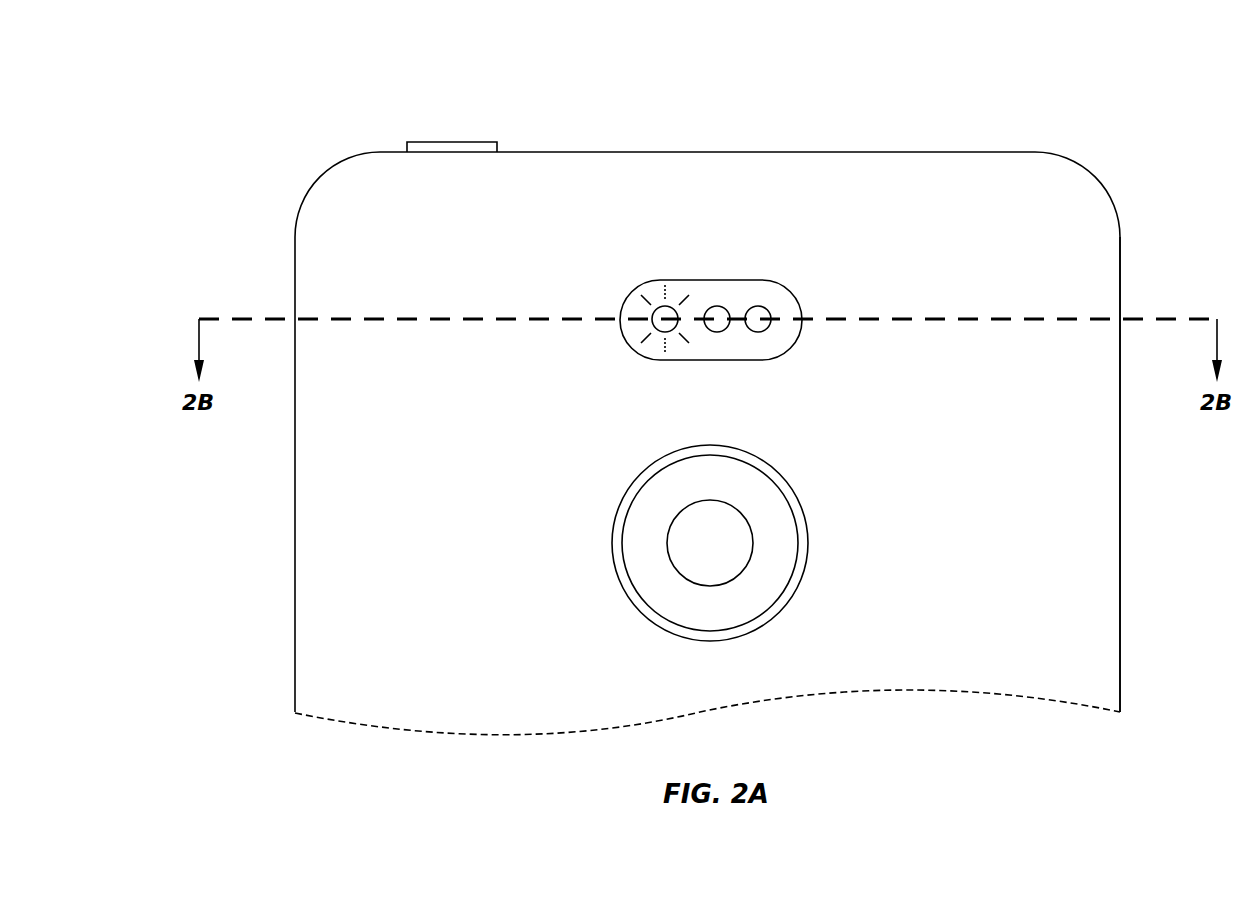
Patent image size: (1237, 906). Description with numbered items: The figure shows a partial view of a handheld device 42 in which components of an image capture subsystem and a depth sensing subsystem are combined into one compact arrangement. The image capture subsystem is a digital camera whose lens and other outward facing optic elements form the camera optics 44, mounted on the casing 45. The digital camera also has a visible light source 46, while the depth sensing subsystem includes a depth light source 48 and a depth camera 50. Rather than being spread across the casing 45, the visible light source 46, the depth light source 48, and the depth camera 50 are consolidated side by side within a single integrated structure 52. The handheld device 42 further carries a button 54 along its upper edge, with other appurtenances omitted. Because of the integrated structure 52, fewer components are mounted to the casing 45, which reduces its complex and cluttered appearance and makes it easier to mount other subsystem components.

The handheld device 42 is at (1050, 95).
The camera optics 44 is at (613, 616).
The casing 45 is at (1123, 246).
The visible light source 46 is at (665, 305).
The depth light source 48 is at (718, 306).
The depth camera 50 is at (758, 305).
The integrated structure 52 is at (620, 316).
The button 54 is at (452, 141).